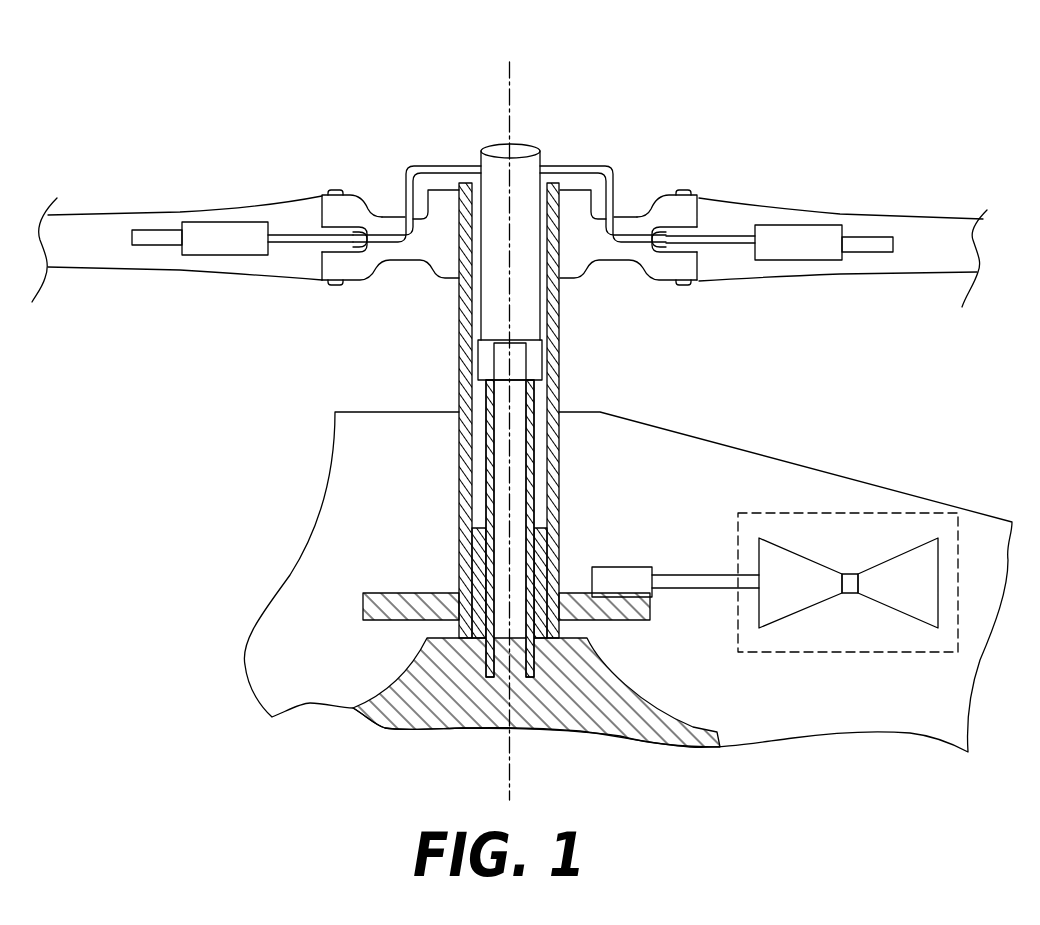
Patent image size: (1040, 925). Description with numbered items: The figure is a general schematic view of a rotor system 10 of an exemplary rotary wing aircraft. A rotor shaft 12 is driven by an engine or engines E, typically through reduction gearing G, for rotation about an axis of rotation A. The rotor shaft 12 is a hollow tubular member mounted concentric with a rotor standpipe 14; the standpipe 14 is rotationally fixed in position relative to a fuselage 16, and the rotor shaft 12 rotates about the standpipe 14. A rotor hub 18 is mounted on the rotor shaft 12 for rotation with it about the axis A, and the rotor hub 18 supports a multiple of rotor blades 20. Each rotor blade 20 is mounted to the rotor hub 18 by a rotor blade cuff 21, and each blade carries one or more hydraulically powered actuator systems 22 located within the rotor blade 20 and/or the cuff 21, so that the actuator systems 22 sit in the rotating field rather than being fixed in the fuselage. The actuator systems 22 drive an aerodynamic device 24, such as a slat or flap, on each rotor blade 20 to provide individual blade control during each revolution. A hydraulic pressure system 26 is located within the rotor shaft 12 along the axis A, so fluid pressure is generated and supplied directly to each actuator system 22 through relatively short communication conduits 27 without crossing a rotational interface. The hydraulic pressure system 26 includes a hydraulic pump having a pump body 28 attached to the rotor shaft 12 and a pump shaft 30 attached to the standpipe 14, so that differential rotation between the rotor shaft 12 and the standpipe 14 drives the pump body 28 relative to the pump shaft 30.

The rotor system 10 is at (730, 90).
The rotor shaft 12 is at (560, 393).
The rotor standpipe 14 is at (535, 483).
The fuselage 16 is at (755, 450).
The rotor hub 18 is at (442, 261).
The rotor blade 20 is at (143, 214).
The rotor blade cuff 21 is at (653, 215).
The actuator system 22 is at (212, 251).
The aerodynamic device 24 is at (167, 246).
The hydraulic pressure system 26 is at (520, 325).
The communication conduit 27 is at (417, 166).
The hydraulic pump body 28 is at (476, 320).
The hydraulic pump shaft 30 is at (528, 358).
The axis of rotation A is at (510, 765).
The reduction gearing G is at (649, 617).
The engine E is at (950, 578).